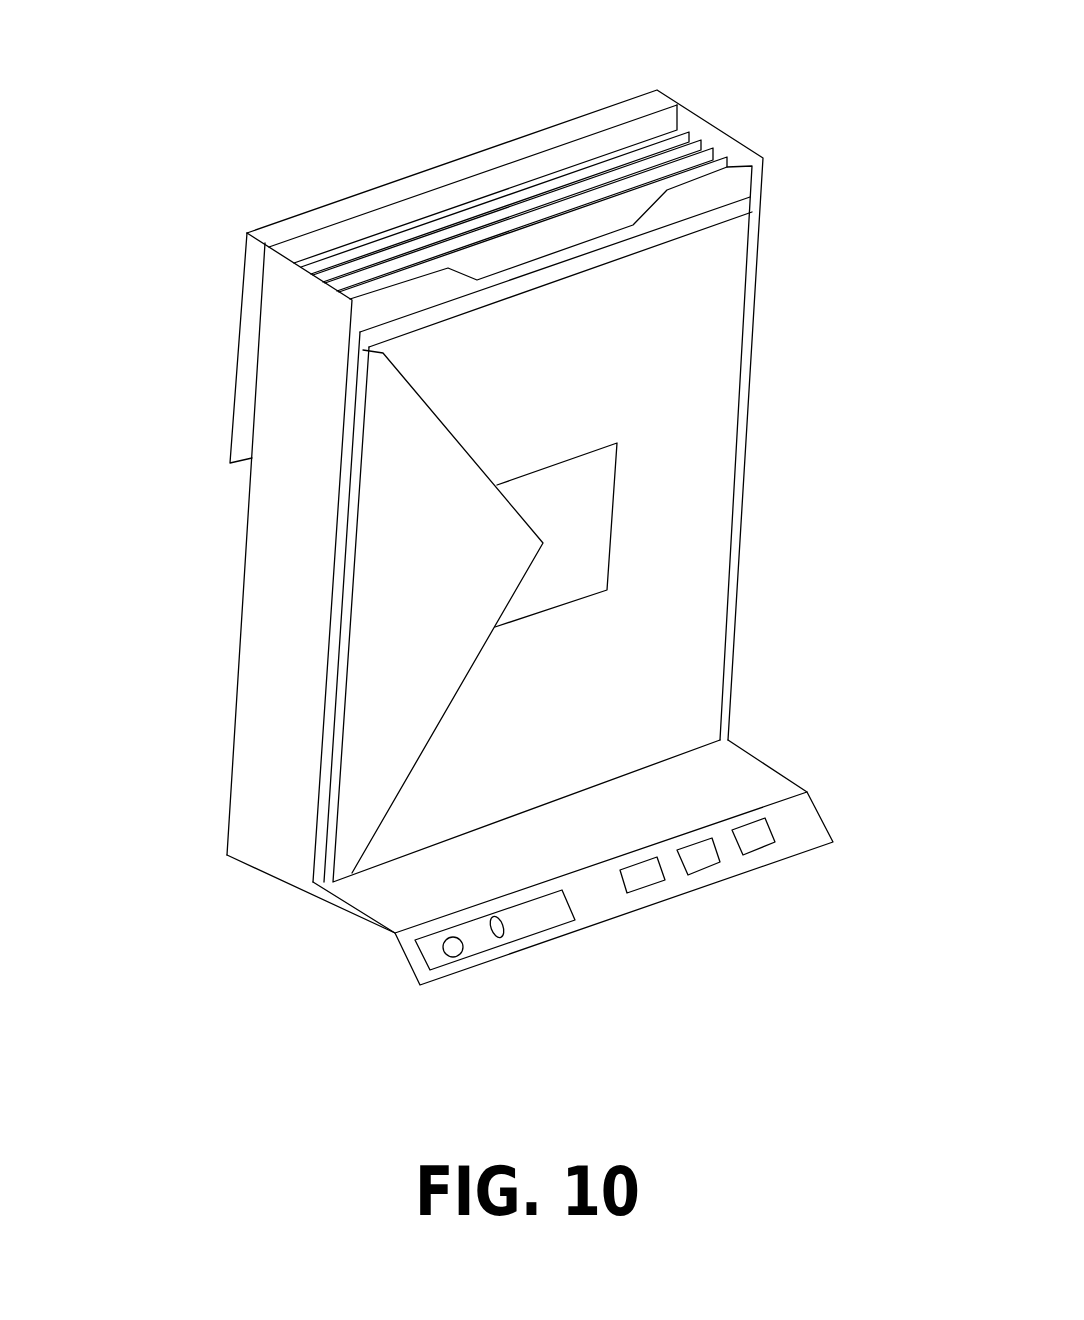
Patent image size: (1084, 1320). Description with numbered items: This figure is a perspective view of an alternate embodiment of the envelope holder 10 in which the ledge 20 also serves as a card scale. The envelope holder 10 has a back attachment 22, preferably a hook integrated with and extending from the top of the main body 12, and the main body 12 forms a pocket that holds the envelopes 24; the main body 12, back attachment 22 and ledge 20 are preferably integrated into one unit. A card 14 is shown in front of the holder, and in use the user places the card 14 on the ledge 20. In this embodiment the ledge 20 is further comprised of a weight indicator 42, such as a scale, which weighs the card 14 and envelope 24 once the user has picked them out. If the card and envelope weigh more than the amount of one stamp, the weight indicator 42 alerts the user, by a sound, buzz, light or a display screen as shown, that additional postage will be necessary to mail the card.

The envelope holder 10 is at (320, 112).
The main body 12 is at (285, 660).
The card 14 is at (672, 490).
The ledge 20 is at (667, 802).
The back attachment 22 is at (250, 360).
The envelope 24 is at (618, 190).
The weight indicator 42 is at (598, 893).